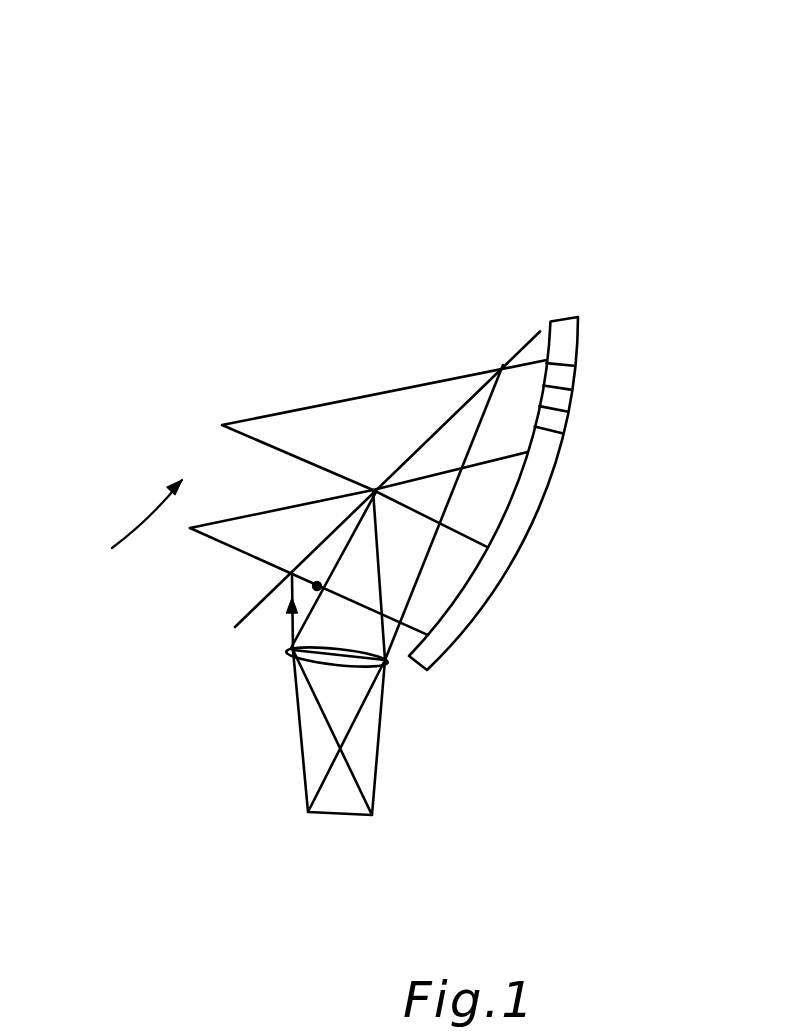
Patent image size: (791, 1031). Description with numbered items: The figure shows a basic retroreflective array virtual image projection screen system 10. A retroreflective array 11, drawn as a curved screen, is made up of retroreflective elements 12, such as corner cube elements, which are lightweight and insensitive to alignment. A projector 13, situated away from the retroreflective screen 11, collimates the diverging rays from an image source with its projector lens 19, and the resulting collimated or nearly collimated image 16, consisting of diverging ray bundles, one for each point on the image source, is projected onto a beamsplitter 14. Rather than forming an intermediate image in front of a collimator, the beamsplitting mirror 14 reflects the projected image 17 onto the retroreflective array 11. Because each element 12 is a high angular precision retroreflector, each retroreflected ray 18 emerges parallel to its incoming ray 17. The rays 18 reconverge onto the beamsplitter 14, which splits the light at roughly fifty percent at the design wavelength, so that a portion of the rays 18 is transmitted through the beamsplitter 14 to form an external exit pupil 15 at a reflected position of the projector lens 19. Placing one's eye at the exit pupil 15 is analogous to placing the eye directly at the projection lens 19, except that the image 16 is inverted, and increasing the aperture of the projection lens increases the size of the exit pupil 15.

The retroreflective array virtual image projection screen system 10 is at (553, 160).
The retroreflective array 11 is at (582, 328).
The retroreflective elements 12 is at (561, 396).
The projector 13 is at (378, 757).
The beamsplitter 14 is at (528, 337).
The exit pupil 15 is at (124, 526).
The collimated image 16 is at (292, 630).
The projected image 17 is at (317, 581).
The retroreflected image rays 18 is at (246, 550).
The projector lens 19 is at (292, 648).